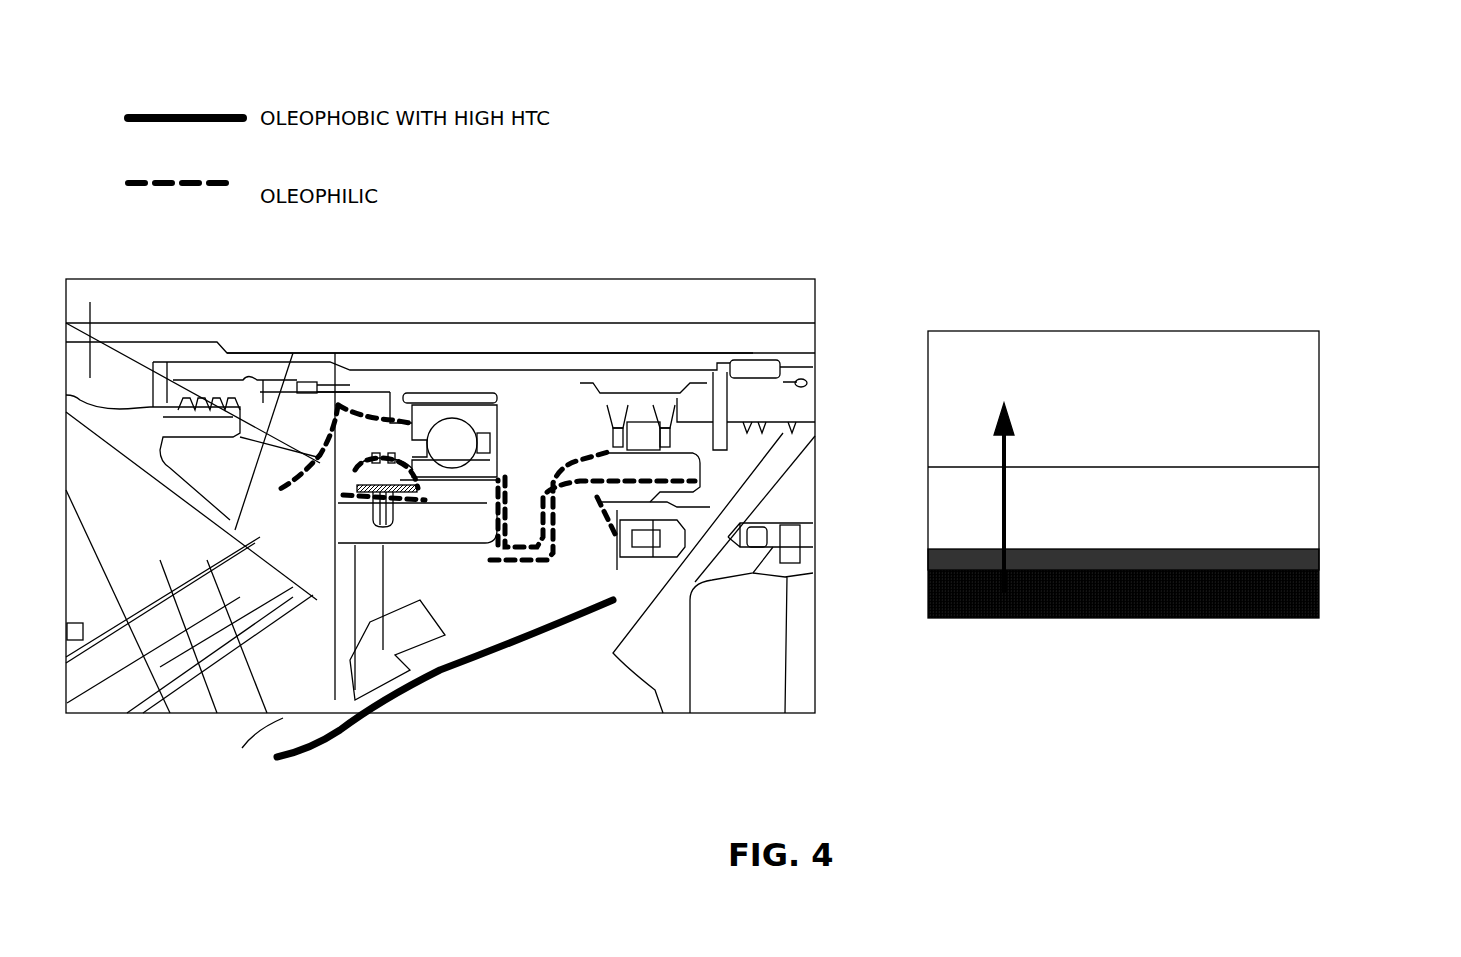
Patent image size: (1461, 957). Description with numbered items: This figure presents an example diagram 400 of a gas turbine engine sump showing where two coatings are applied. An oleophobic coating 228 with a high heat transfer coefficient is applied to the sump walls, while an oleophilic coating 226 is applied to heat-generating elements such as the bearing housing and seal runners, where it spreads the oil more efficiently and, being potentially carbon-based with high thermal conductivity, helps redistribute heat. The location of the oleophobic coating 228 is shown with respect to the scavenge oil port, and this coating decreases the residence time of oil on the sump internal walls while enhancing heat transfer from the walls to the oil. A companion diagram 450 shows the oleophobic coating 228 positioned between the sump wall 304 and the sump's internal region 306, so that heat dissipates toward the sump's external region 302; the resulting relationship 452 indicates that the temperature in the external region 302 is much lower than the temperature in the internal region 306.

The oleophilic coating 226 is at (168, 182).
The oleophobic coating 228 is at (180, 117).
The external region 302 is at (1253, 380).
The sump wall 304 is at (1292, 503).
The internal region 306 is at (1303, 595).
The diagram 400 is at (672, 238).
The diagram 450 is at (1186, 401).
The relationship 452 is at (1200, 268).